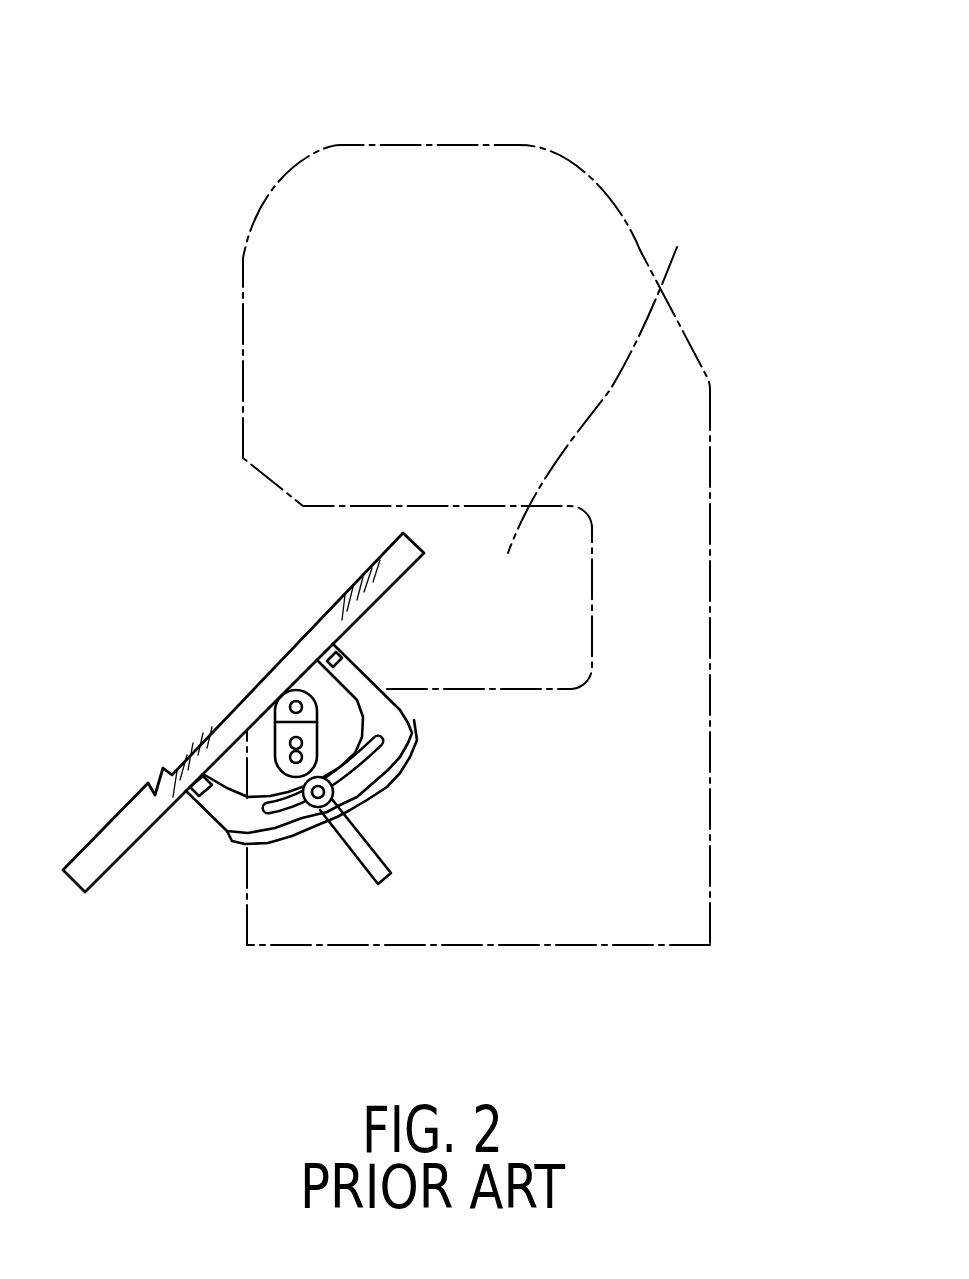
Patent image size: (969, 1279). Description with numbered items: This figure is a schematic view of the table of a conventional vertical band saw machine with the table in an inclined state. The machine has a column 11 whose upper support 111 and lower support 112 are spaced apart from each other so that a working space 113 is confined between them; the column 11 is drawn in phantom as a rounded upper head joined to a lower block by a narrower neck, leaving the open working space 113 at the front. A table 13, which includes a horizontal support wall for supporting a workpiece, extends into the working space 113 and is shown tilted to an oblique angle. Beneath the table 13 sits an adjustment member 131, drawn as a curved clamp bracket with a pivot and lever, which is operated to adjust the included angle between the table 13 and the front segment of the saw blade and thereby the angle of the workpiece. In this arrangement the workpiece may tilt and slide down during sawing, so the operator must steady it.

The column 11 is at (712, 648).
The upper support 111 is at (448, 172).
The lower support 112 is at (498, 912).
The working space 113 is at (607, 375).
The table 13 is at (260, 685).
The adjustment member 131 is at (296, 828).